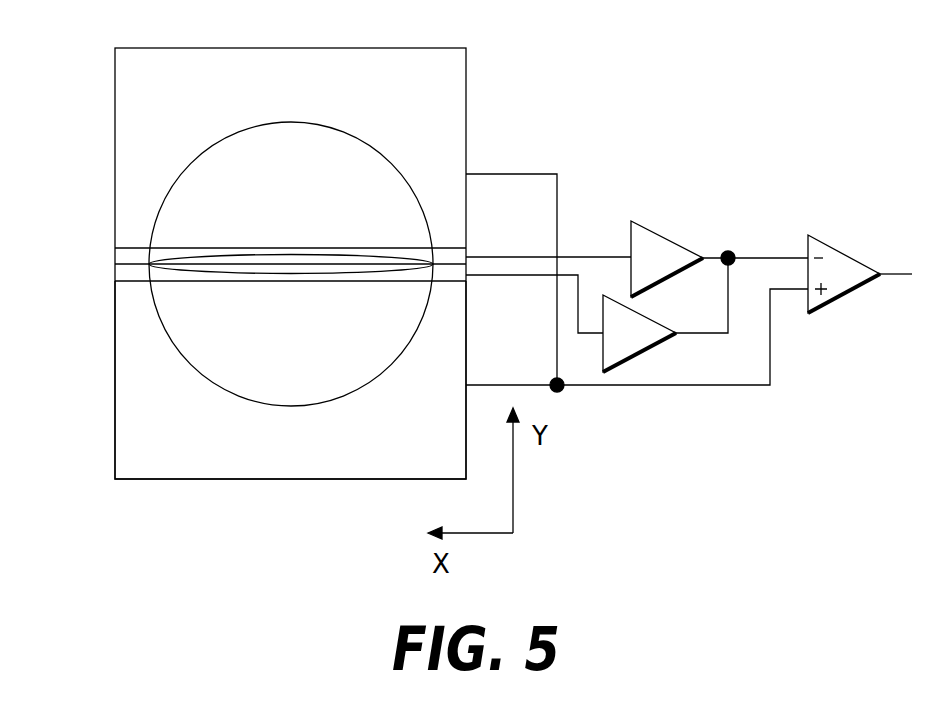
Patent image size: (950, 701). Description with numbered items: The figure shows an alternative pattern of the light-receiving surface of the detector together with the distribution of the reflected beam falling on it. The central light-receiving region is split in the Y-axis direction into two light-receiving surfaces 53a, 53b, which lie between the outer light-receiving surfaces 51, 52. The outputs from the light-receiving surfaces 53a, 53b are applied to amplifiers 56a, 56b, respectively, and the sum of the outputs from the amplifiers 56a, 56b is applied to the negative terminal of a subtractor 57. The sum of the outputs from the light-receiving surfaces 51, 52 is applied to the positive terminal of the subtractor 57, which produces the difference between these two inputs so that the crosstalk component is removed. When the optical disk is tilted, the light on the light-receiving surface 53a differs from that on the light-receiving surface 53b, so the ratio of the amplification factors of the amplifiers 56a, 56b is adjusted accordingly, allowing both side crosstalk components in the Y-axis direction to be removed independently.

The light-receiving surface 51 is at (115, 92).
The light-receiving surface 52 is at (115, 434).
The light-receiving surface 53a is at (115, 256).
The light-receiving surface 53b is at (115, 275).
The amplifier 56a is at (652, 230).
The amplifier 56b is at (634, 362).
The subtractor 57 is at (838, 247).